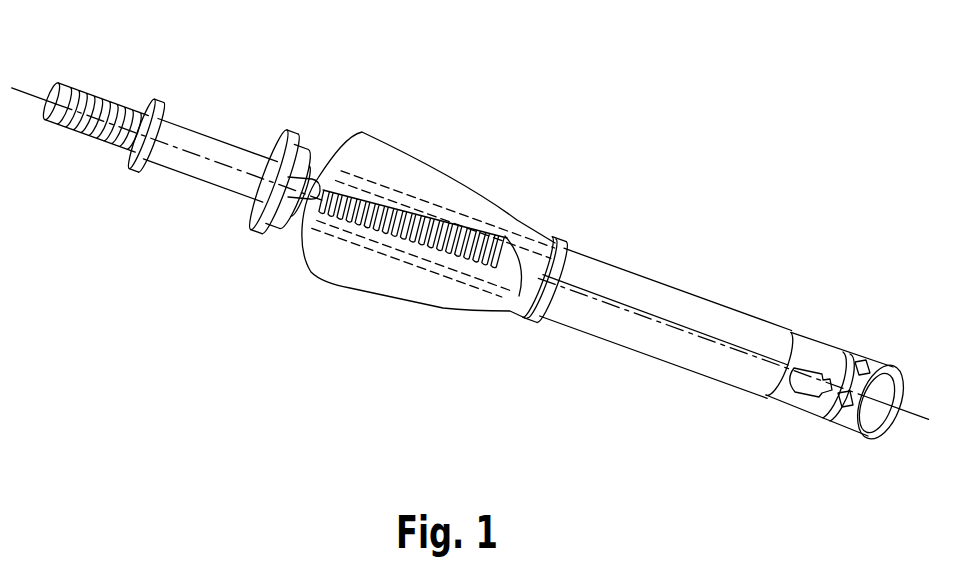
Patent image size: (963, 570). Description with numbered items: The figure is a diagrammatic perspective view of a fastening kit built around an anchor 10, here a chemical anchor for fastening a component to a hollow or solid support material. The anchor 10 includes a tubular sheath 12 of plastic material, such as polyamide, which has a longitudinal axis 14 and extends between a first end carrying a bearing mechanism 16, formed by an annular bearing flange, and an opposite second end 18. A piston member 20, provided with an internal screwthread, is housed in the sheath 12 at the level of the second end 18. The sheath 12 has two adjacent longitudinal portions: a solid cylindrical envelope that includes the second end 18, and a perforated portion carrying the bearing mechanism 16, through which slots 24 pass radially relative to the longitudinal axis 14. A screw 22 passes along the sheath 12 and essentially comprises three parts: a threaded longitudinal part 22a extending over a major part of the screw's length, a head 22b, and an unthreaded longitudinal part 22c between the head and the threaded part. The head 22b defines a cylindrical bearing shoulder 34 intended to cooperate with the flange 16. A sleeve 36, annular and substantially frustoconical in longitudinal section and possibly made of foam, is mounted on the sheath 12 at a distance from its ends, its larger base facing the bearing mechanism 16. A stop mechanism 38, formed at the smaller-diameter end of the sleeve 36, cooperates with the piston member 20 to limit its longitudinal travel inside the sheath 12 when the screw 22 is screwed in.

The anchor 10 is at (658, 264).
The tubular sheath 12 is at (690, 374).
The longitudinal axis 14 is at (903, 410).
The bearing mechanism 16 is at (298, 134).
The second end 18 is at (896, 366).
The piston member 20 is at (818, 413).
The screw 22 is at (216, 129).
The threaded longitudinal part 22a is at (395, 214).
The head 22b is at (84, 94).
The unthreaded longitudinal part 22c is at (186, 160).
The slots 24 is at (458, 237).
The cylindrical bearing shoulder 34 is at (160, 110).
The sleeve 36 is at (350, 290).
The stop mechanism 38 is at (559, 273).